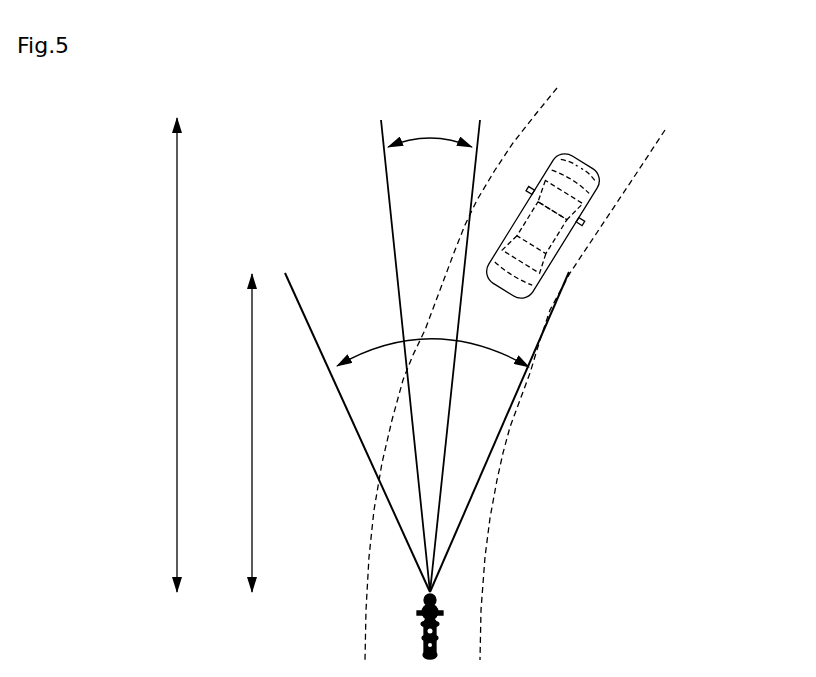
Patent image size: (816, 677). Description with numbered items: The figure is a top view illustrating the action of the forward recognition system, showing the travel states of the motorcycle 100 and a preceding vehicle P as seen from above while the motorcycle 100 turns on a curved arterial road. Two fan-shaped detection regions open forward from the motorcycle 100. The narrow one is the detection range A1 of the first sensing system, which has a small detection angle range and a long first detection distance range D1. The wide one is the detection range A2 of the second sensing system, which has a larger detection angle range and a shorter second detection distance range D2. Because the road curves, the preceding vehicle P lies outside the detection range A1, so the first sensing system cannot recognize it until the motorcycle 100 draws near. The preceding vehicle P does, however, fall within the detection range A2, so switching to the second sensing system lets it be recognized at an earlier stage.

The motorcycle 100 is at (437, 627).
The preceding vehicle P is at (544, 233).
The detection range of the first sensing system A1 is at (386, 192).
The detection range of the second sensing system A2 is at (477, 488).
The first detection distance range D1 is at (146, 355).
The second detection distance range D2 is at (221, 433).